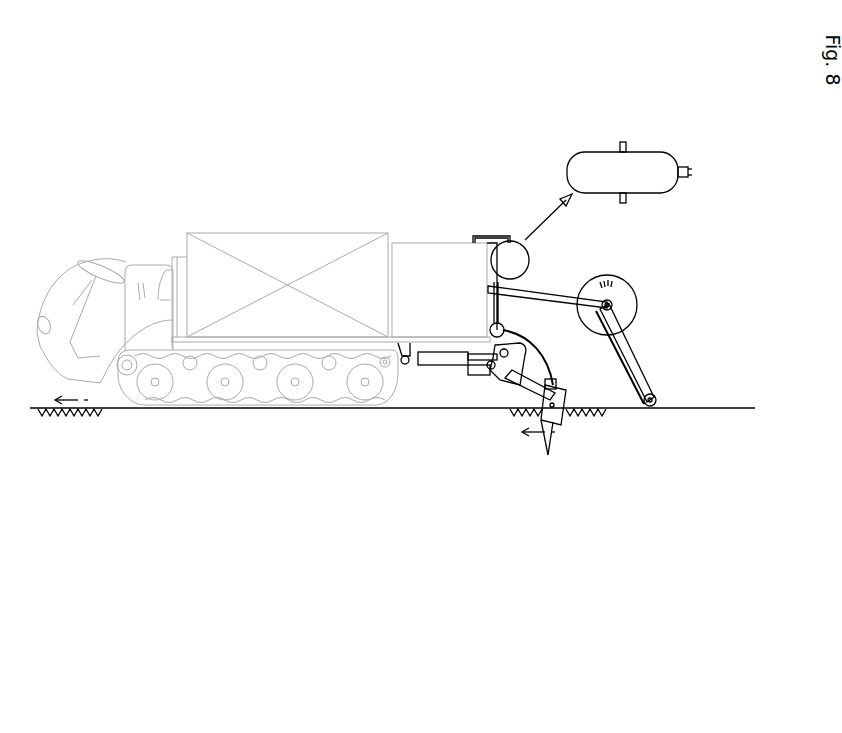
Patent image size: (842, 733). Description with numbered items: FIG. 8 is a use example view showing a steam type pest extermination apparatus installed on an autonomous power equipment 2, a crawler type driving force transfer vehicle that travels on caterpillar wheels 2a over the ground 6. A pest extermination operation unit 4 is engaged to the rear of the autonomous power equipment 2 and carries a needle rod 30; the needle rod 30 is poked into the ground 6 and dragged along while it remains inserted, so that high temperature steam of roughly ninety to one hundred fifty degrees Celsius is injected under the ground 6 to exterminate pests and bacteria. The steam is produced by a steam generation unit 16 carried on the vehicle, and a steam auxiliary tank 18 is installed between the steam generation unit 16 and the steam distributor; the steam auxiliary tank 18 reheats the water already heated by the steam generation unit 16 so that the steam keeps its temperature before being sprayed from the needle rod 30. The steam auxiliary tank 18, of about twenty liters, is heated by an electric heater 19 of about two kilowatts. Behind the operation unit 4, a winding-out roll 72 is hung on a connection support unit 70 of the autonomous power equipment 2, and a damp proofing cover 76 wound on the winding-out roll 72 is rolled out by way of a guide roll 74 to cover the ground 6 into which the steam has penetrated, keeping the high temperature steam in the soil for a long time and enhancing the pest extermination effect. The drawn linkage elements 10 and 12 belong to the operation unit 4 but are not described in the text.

The autonomous power equipment 2 is at (146, 268).
The caterpillar wheels 2a is at (178, 410).
The pest extermination operation unit 4 is at (499, 401).
The ground 6 is at (288, 453).
The hydraulic cylinder 10 is at (441, 358).
The link bracket 12 is at (513, 373).
The steam generation unit 16 is at (458, 243).
The steam auxiliary tank 18 is at (521, 262).
The electric heater 19 is at (688, 166).
The needle rod 30 is at (557, 440).
The connection support unit 70 is at (547, 293).
The winding-out roll 72 is at (637, 304).
The guide roll 74 is at (655, 395).
The damp proofing cover 76 is at (718, 408).